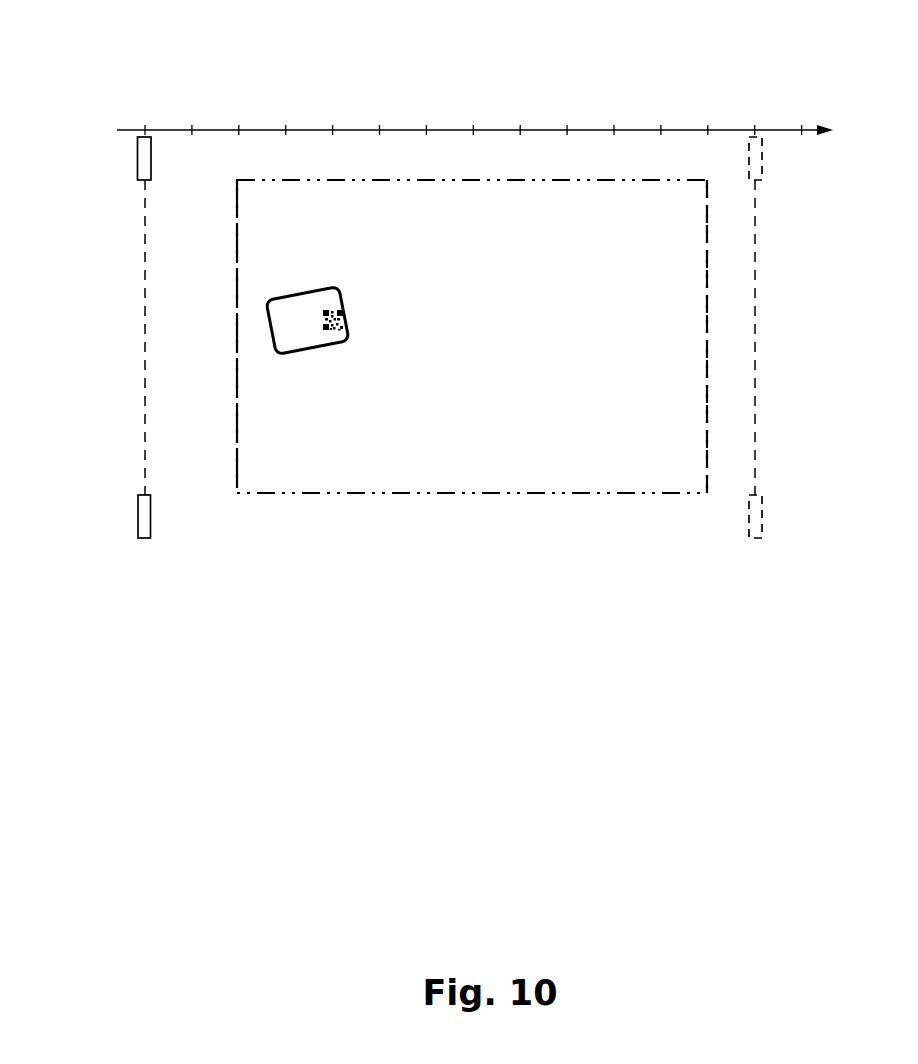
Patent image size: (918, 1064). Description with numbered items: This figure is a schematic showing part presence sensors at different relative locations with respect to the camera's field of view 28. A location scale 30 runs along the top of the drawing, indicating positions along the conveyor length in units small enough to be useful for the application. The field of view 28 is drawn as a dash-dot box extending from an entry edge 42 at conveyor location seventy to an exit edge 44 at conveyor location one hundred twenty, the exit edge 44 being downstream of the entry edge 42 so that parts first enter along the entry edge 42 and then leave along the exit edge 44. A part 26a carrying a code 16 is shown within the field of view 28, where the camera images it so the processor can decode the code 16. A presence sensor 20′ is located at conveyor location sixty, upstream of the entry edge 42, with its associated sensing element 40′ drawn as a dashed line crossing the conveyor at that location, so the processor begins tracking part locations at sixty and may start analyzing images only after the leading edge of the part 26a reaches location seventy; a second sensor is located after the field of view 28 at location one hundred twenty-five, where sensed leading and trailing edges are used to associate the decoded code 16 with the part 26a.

The location scale 30 is at (687, 130).
The first sensor beam 40′ is at (144, 297).
The sensor 20′ is at (138, 515).
The field of view 28 is at (684, 272).
The entry edge 42 is at (238, 382).
The exit edge 44 is at (707, 437).
The part 26a is at (307, 338).
The code 16 is at (333, 312).